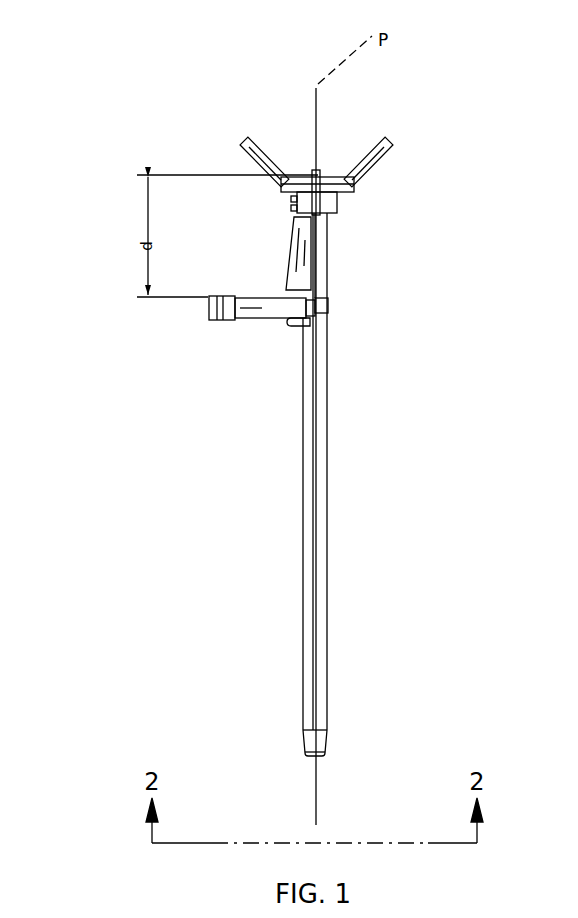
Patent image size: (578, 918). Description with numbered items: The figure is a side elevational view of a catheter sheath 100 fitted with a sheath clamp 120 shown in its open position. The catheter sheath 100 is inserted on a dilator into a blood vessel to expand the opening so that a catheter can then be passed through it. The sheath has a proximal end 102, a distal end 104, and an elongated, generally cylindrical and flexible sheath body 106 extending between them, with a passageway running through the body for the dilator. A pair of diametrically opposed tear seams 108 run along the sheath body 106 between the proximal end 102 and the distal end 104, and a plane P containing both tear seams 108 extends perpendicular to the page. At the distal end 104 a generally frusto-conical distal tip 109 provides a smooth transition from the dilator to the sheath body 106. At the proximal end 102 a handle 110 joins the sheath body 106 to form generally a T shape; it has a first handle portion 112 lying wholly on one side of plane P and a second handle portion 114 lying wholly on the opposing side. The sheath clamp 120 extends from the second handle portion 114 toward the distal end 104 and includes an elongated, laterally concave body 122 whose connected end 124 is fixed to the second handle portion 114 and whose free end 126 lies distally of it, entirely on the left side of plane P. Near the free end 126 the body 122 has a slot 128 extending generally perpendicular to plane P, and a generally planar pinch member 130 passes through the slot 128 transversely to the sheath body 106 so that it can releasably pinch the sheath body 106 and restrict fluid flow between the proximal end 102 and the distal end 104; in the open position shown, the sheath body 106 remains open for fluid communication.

The catheter sheath 100 is at (247, 499).
The proximal end 102 is at (336, 167).
The distal end 104 is at (321, 757).
The sheath body 106 is at (329, 628).
The tear seams 108 is at (313, 581).
The distal tip 109 is at (294, 752).
The handle 110 is at (383, 170).
The first handle portion 112 is at (398, 146).
The second handle portion 114 is at (241, 146).
The sheath clamp 120 is at (363, 238).
The body 122 is at (289, 243).
The connected end 124 is at (290, 198).
The free end 126 is at (298, 330).
The slot 128 is at (289, 327).
The pinch member 130 is at (216, 321).